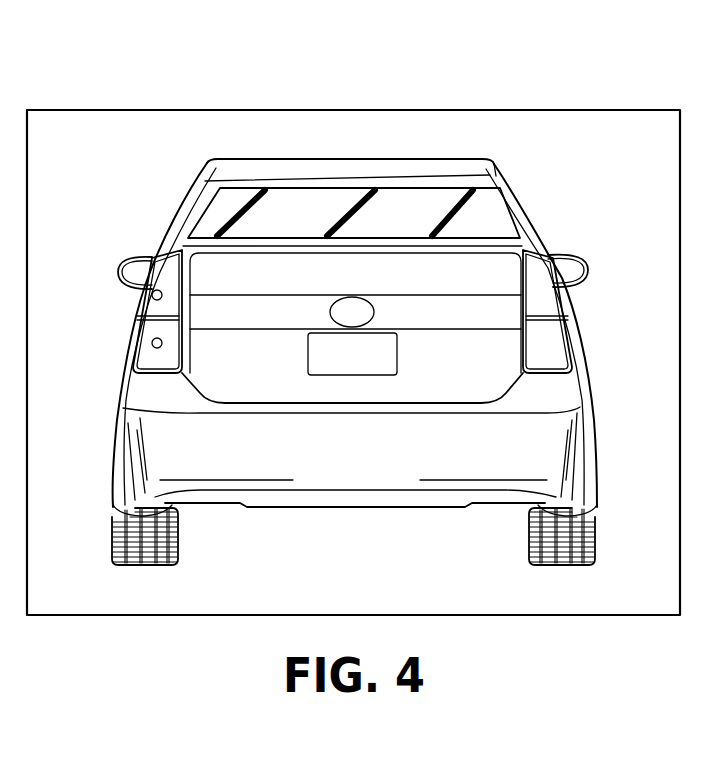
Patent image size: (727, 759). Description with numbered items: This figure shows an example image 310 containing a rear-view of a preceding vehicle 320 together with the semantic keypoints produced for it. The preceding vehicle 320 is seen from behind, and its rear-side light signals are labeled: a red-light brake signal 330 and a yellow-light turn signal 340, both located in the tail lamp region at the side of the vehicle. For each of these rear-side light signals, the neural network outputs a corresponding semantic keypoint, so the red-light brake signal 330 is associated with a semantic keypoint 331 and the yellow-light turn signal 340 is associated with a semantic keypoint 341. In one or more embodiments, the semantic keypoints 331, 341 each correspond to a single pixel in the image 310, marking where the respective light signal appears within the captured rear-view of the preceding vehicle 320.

The image 310 is at (556, 110).
The preceding vehicle 320 is at (383, 168).
The red-light brake signal 330 is at (148, 362).
The semantic keypoint 331 is at (152, 343).
The yellow-light turn signal 340 is at (150, 277).
The semantic keypoint 341 is at (152, 295).